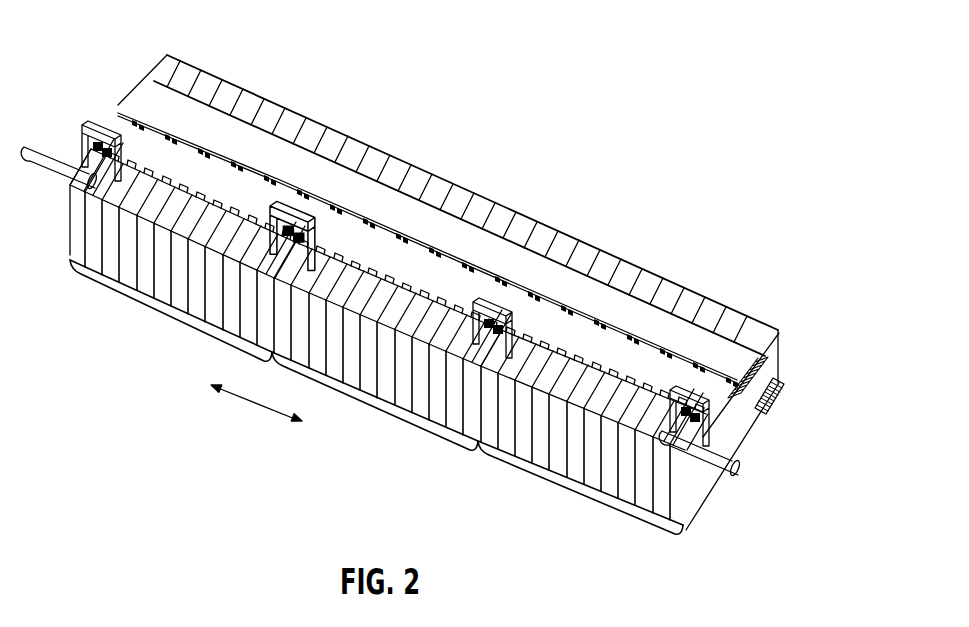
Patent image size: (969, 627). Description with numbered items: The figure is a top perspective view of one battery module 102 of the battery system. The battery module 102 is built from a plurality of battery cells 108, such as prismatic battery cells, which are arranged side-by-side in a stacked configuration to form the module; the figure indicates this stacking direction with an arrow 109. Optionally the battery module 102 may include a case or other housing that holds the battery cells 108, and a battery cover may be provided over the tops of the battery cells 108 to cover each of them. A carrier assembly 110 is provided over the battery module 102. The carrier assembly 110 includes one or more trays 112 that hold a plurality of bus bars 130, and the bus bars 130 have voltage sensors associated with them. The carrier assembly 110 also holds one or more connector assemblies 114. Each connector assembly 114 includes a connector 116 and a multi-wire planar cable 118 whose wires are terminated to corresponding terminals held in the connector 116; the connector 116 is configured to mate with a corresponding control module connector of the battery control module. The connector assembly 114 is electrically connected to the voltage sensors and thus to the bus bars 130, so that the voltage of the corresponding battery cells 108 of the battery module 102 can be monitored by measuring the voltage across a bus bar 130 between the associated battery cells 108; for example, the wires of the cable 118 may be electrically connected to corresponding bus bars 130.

The battery module 102 is at (578, 492).
The battery cells 108 is at (745, 326).
The longitudinal direction 109 is at (253, 406).
The carrier assembly 110 is at (265, 154).
The tray 112 is at (728, 357).
The connector assembly 114 is at (790, 383).
The connector 116 is at (794, 384).
The multi-wire planar cable 118 is at (745, 392).
The bus bars 130 is at (481, 336).